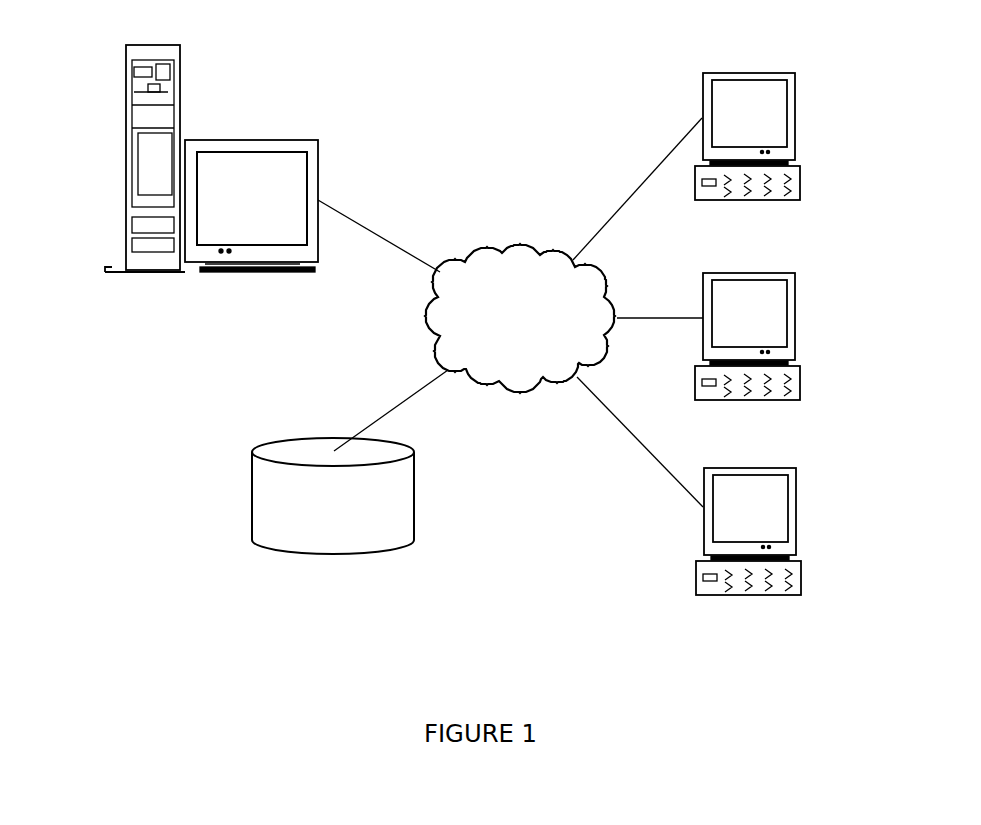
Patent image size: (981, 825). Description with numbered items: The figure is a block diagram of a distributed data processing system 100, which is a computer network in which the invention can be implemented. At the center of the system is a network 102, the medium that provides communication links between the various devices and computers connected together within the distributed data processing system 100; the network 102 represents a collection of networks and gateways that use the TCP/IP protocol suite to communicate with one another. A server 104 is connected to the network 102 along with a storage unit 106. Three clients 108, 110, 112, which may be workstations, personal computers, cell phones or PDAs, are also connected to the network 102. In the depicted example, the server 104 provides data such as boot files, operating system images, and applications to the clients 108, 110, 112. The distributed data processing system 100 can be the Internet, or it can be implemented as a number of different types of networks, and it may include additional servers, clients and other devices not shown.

The distributed data processing system 100 is at (424, 90).
The network 102 is at (483, 247).
The server 104 is at (126, 160).
The storage unit 106 is at (250, 497).
The client 108 is at (797, 117).
The client 110 is at (797, 315).
The client 112 is at (797, 512).